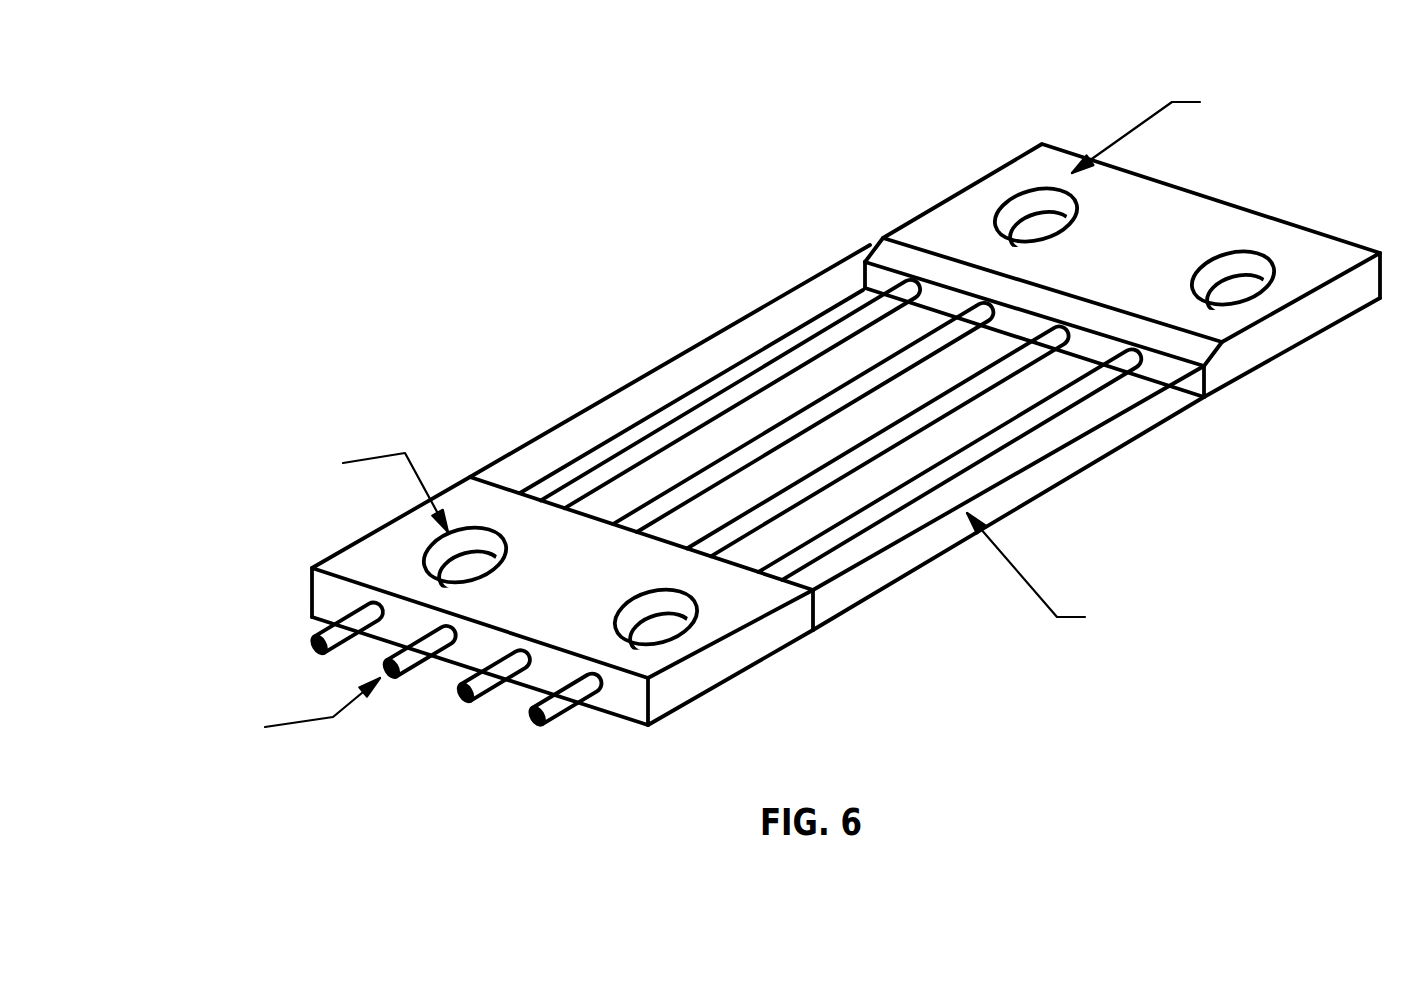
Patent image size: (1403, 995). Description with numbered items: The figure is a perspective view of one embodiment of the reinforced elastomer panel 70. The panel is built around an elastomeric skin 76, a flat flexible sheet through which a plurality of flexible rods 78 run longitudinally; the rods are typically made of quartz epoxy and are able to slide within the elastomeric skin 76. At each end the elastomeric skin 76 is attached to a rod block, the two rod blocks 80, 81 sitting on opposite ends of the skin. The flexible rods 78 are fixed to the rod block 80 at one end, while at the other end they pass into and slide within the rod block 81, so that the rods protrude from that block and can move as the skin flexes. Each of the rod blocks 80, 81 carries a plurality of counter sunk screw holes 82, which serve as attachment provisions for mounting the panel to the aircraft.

The reinforced elastomer panel 70 is at (756, 46).
The elastomeric skin 76 is at (1135, 421).
The flexible rods 78 is at (835, 333).
The rod block 80 is at (922, 228).
The rod block 81 is at (438, 514).
The counter sunk screw holes 82 is at (433, 543).